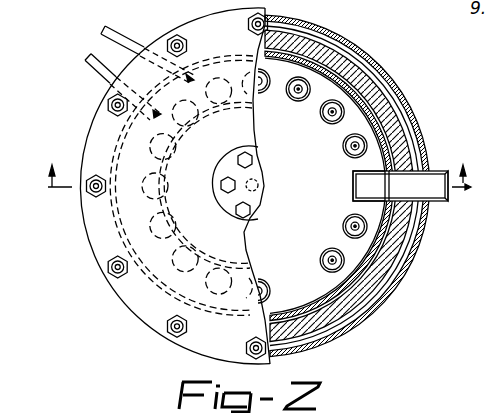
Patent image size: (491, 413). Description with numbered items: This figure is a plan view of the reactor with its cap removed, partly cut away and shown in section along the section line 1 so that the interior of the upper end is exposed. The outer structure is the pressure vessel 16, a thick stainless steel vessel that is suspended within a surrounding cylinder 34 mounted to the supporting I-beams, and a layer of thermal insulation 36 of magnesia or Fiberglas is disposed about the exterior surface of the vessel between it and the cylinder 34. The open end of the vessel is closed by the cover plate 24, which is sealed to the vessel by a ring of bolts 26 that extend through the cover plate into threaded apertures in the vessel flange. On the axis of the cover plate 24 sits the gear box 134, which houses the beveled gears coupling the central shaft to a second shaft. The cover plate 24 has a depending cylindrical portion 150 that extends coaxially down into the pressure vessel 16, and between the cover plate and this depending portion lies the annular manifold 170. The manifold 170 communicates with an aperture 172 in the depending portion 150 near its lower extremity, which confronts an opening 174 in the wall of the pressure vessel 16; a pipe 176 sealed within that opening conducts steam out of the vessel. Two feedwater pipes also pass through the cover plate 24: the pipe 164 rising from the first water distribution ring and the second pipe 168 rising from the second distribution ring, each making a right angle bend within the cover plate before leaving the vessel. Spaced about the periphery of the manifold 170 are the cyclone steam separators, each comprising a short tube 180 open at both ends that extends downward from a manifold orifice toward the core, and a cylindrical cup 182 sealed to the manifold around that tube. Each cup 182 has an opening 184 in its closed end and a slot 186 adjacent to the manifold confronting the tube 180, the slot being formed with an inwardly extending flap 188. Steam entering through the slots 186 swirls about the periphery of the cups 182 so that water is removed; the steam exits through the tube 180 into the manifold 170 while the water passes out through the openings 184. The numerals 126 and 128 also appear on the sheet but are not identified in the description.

The section line 1- 1 is at (257, 182).
The pressure vessel 16 is at (364, 93).
The cover plate 24 is at (100, 147).
The bolts 26 is at (166, 327).
The cylinder 34 is at (340, 38).
The layer of thermal insulation 36 is at (348, 62).
The conduit 126 is at (469, 359).
The conduit 128 is at (479, 254).
The gear box 134 is at (231, 157).
The depending cylindrical portion 150 is at (370, 117).
The pipe 164 is at (119, 35).
The second pipe 168 is at (107, 76).
The annular manifold 170 is at (140, 214).
The aperture 172 is at (369, 186).
The opening 174 is at (392, 186).
The pipe 176 is at (413, 166).
The tube 180 is at (344, 144).
The cylindrical cup 182 is at (350, 157).
The opening 184 is at (344, 235).
The slot 186 is at (290, 100).
The inwardly extending flap 188 is at (321, 115).